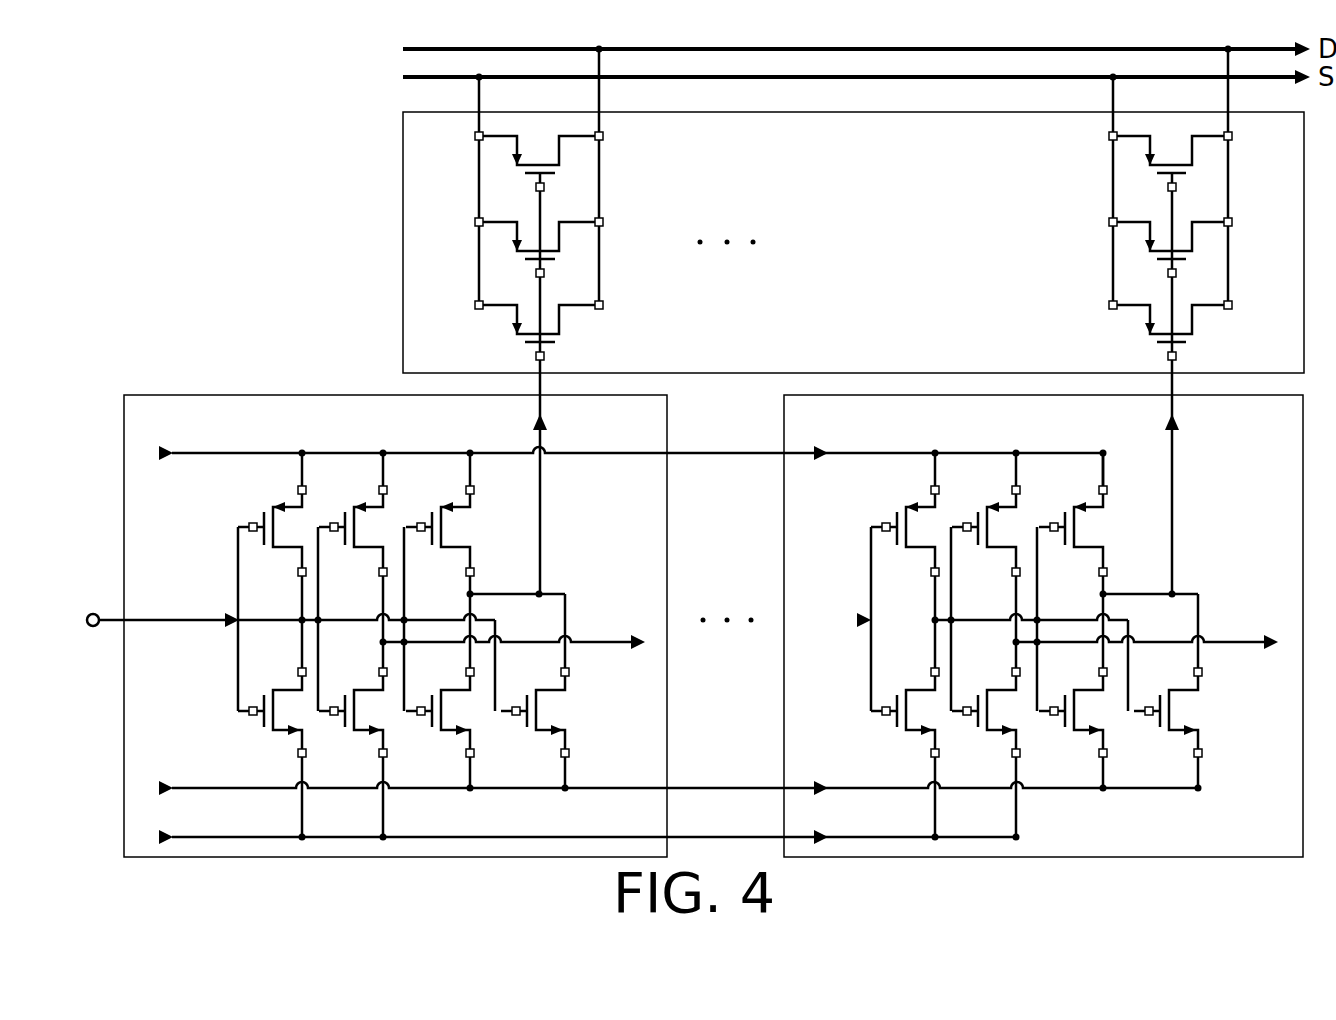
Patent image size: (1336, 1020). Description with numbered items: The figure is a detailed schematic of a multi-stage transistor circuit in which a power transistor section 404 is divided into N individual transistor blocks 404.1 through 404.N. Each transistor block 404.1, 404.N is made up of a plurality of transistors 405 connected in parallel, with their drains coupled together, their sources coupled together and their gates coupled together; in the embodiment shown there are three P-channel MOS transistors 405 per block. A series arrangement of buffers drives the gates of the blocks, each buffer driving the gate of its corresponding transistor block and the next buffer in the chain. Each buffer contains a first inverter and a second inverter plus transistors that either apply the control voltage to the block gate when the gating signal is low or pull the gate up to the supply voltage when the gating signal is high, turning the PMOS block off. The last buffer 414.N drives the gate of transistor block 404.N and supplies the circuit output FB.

The power transistor section 404 is at (1012, 145).
The transistor block 404.1 is at (430, 240).
The transistor block 404.N is at (1110, 200).
The transistors 405 is at (605, 305).
The buffer 414.N is at (1163, 838).